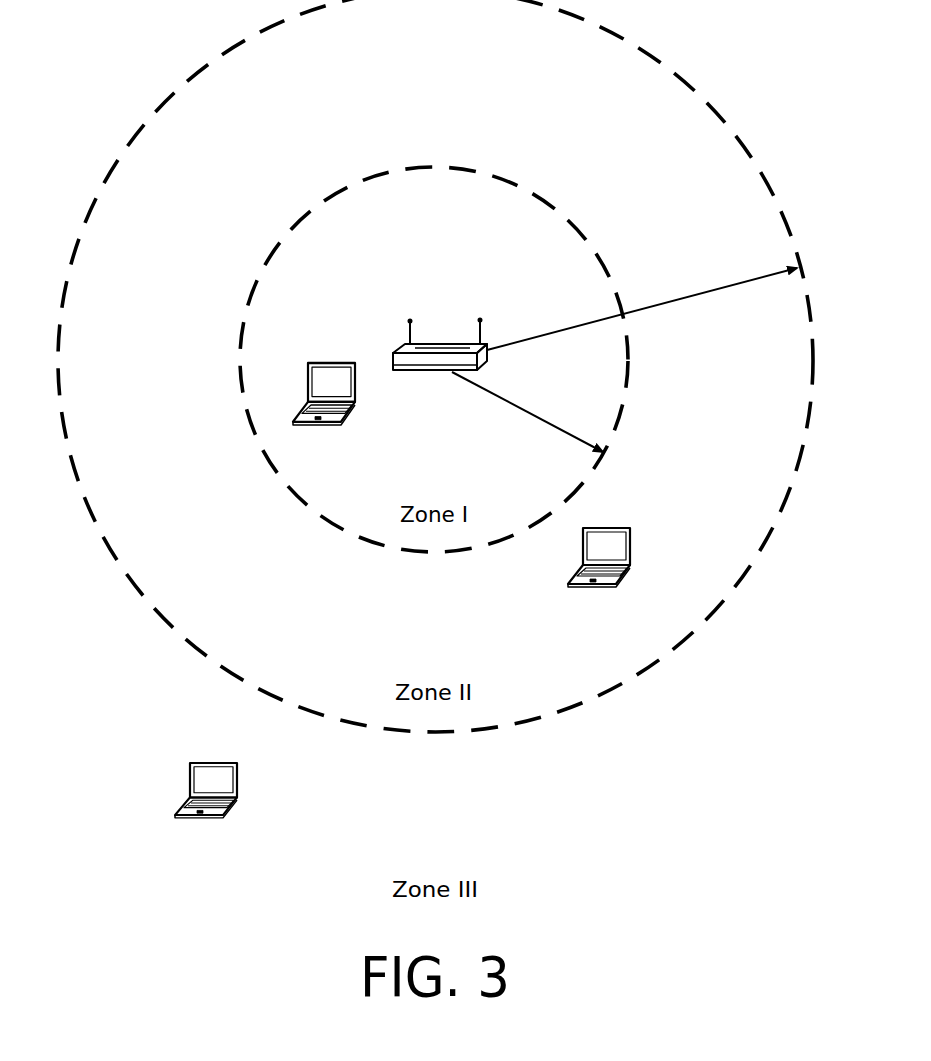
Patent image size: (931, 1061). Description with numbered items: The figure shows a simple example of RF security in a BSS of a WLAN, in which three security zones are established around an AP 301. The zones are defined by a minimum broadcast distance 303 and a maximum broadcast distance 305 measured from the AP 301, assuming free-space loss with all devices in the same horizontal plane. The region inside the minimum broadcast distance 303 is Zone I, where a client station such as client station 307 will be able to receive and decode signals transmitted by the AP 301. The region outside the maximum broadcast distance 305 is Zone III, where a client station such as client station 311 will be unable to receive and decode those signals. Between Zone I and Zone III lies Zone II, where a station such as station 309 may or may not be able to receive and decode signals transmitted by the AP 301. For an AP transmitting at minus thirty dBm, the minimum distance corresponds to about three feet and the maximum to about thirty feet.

The AP 301 is at (438, 352).
The minimum broadcast distance 303 is at (528, 410).
The maximum broadcast distance 305 is at (672, 300).
The client station 307 is at (335, 363).
The station 309 is at (630, 530).
The client station 311 is at (202, 763).